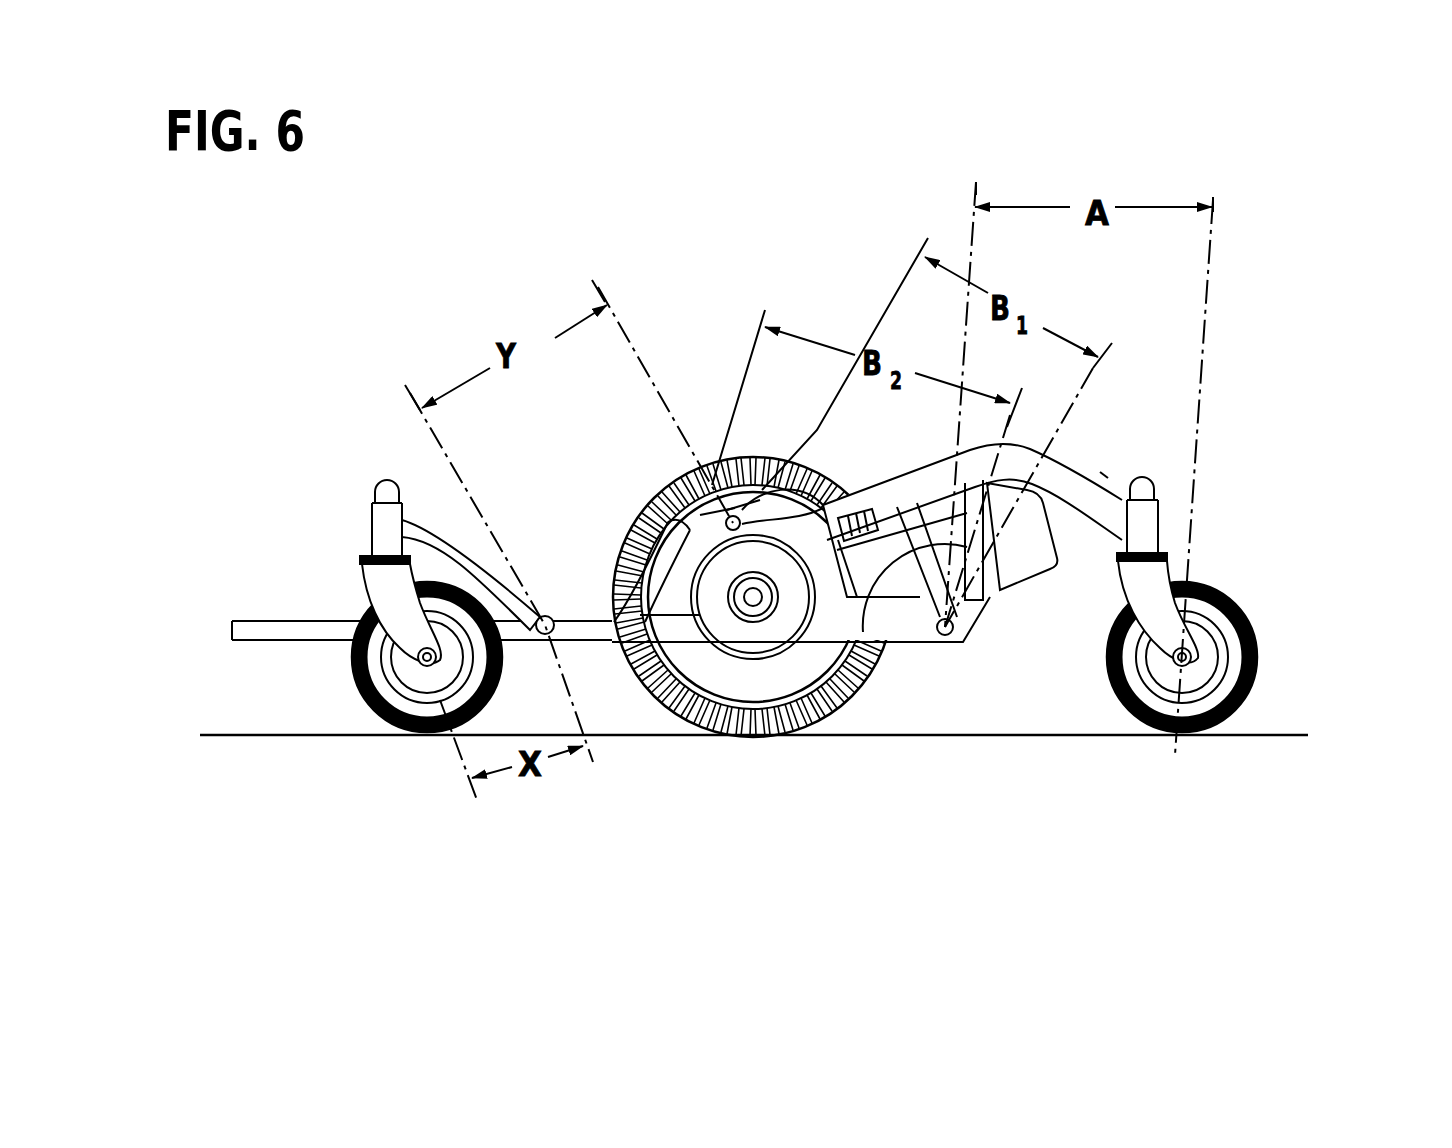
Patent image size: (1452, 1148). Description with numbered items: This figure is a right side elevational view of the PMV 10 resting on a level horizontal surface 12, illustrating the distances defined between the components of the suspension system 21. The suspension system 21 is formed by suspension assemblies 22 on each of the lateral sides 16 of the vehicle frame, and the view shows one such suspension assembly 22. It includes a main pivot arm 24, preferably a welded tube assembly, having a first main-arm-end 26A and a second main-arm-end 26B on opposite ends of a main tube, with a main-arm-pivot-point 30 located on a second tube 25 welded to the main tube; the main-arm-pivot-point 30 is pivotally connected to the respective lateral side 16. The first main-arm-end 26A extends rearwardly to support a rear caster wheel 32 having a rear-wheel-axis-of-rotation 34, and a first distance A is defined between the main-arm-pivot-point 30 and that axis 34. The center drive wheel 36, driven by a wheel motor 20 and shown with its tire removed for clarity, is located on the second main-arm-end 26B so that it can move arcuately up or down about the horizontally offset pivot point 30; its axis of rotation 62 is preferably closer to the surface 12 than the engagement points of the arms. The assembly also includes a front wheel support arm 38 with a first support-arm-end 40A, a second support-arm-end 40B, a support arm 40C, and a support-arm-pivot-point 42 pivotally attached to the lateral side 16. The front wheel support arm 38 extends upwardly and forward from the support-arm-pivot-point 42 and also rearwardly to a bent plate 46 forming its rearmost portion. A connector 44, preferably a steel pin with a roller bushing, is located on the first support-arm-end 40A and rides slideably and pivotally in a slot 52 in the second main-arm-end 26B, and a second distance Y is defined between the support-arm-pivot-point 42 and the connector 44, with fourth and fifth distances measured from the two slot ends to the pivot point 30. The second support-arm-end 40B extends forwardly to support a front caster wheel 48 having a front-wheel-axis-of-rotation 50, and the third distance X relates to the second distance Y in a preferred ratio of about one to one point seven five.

The PMV 10 is at (703, 333).
The surface 12 is at (278, 740).
The lateral sides 16 is at (893, 637).
The wheel motor 20 is at (1037, 568).
The suspension system 21 is at (617, 757).
The suspension assembly 22 is at (1243, 455).
The main pivot arm 24 is at (1080, 480).
The second tube 25 is at (865, 663).
The first main-arm-end 26A is at (1147, 522).
The second main-arm-end 26B is at (688, 605).
The main-arm-pivot-point 30 is at (952, 638).
The rear caster wheel 32 is at (1250, 693).
The rear-wheel-axis-of-rotation 34 is at (1185, 667).
The center drive wheel 36 is at (730, 690).
The front wheel support arm 38 is at (580, 615).
The first support-arm-end 40A is at (757, 457).
The second support-arm-end 40B is at (385, 527).
The support arm 40C is at (428, 523).
The support-arm-pivot-point 42 is at (650, 663).
The connector 44 is at (795, 605).
The bent plate 46 is at (668, 533).
The front caster wheel 48 is at (400, 727).
The front-wheel-axis-of-rotation 50 is at (415, 660).
The slot 52 is at (815, 507).
The axis of rotation 62 is at (753, 606).